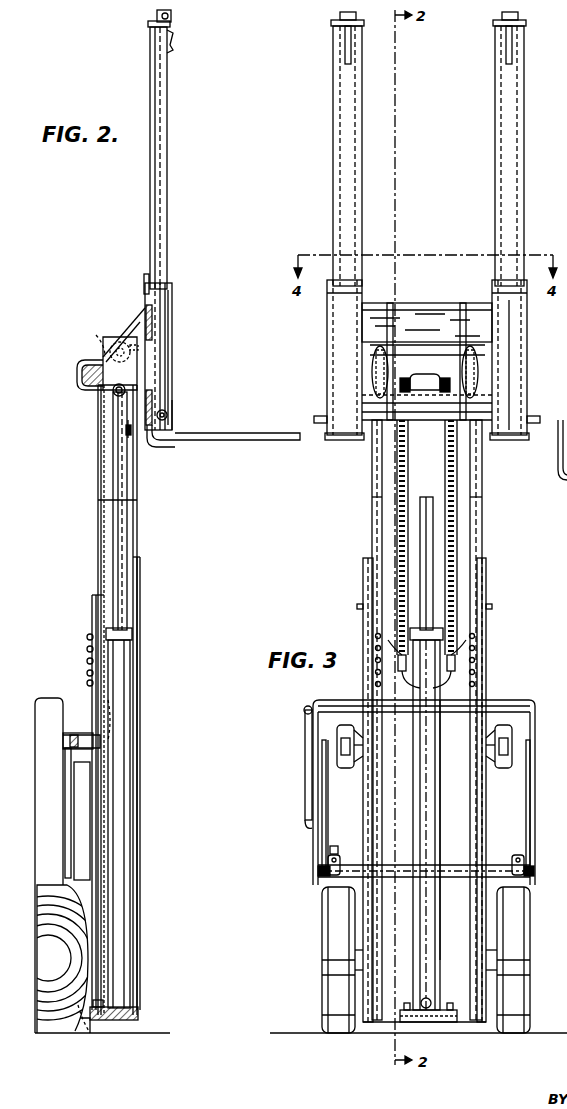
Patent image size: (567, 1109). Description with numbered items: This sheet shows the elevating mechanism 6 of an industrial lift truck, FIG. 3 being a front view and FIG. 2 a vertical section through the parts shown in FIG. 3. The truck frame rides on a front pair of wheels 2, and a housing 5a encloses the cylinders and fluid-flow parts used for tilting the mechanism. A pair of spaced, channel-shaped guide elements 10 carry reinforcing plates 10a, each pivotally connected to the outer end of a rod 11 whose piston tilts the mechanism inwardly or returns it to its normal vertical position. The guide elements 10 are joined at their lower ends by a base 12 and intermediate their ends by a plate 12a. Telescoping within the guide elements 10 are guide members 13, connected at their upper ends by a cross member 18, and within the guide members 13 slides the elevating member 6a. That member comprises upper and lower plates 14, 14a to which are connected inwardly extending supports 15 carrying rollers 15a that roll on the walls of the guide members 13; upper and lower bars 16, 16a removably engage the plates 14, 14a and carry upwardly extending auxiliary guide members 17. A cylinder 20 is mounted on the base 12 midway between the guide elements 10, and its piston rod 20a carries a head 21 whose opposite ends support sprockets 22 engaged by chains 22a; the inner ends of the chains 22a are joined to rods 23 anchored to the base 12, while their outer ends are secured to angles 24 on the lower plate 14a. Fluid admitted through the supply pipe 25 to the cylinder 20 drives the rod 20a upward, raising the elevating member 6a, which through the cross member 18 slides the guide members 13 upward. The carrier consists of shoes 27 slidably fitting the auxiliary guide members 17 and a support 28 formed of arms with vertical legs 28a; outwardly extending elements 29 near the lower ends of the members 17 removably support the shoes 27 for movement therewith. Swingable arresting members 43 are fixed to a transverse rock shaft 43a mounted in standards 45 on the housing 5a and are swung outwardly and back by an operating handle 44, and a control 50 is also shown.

In FIG. 2, the front pair of wheels 2 is at (55, 1036).
In FIG. 3, the front pair of wheels 2 is at (343, 1036).
In FIG. 2, the housing 5a is at (50, 705).
In FIG. 3, the housing 5a is at (318, 704).
In FIG. 3, the elevating mechanism 6 is at (424, 851).
In FIG. 2, the elevating member 6a is at (120, 354).
In FIG. 3, the elevating member 6a is at (427, 315).
In FIG. 2, the guide elements 10 is at (140, 864).
In FIG. 3, the guide elements 10 is at (486, 596).
In FIG. 3, the reinforcing plates 10a is at (358, 812).
In FIG. 2, the rod 11 is at (72, 752).
In FIG. 3, the rod 11 is at (339, 742).
In FIG. 2, the base 12 is at (130, 1020).
In FIG. 3, the base 12 is at (460, 1023).
In FIG. 2, the plate 12a is at (87, 644).
In FIG. 3, the plate 12a is at (483, 641).
In FIG. 2, the guide members 13 is at (137, 522).
In FIG. 3, the guide members 13 is at (372, 548).
In FIG. 2, the upper plate 14 is at (160, 328).
In FIG. 3, the upper plate 14 is at (468, 305).
In FIG. 2, the lower plate 14a is at (152, 400).
In FIG. 3, the lower plate 14a is at (493, 407).
In FIG. 2, the supports 15 is at (135, 318).
In FIG. 2, the rollers 15a is at (104, 340).
In FIG. 3, the rollers 15a is at (558, 563).
In FIG. 2, the upper bar 16 is at (145, 294).
In FIG. 3, the upper bar 16 is at (562, 547).
In FIG. 2, the lower bar 16a is at (166, 443).
In FIG. 2, the auxiliary guide members 17 is at (167, 168).
In FIG. 3, the auxiliary guide members 17 is at (362, 161).
In FIG. 2, the cross member 18 is at (86, 358).
In FIG. 2, the cylinder 20 is at (128, 662).
In FIG. 3, the cylinder 20 is at (440, 825).
In FIG. 2, the rod 20a is at (120, 487).
In FIG. 3, the rod 20a is at (433, 580).
In FIG. 3, the head 21 is at (443, 376).
In FIG. 3, the sprockets 22 is at (390, 365).
In FIG. 3, the chains 22a is at (398, 521).
In FIG. 3, the rods 23 is at (455, 800).
In FIG. 2, the angles 24 is at (132, 435).
In FIG. 2, the supply pipe 25 is at (78, 1030).
In FIG. 2, the shoes 27 is at (163, 351).
In FIG. 3, the shoes 27 is at (327, 356).
In FIG. 2, the support 28 is at (237, 429).
In FIG. 3, the support 28 is at (522, 440).
In FIG. 2, the vertical legs 28a is at (172, 410).
In FIG. 3, the vertical legs 28a is at (512, 357).
In FIG. 2, the outwardly extending elements 29 is at (168, 425).
In FIG. 3, the outwardly extending elements 29 is at (322, 430).
In FIG. 3, the swingable members 43 is at (328, 812).
In FIG. 3, the rock shaft 43a is at (332, 855).
In FIG. 3, the operating handle 44 is at (560, 470).
In FIG. 3, the standards 45 is at (320, 870).
In FIG. 3, the control 50 is at (545, 705).